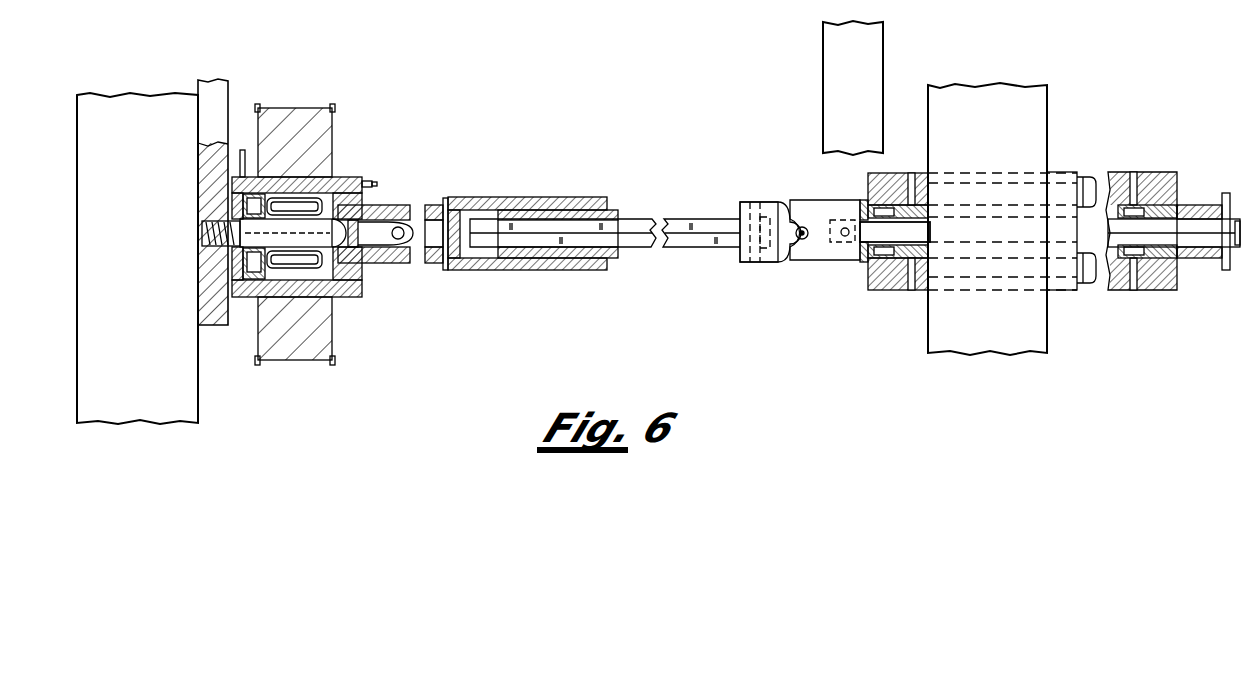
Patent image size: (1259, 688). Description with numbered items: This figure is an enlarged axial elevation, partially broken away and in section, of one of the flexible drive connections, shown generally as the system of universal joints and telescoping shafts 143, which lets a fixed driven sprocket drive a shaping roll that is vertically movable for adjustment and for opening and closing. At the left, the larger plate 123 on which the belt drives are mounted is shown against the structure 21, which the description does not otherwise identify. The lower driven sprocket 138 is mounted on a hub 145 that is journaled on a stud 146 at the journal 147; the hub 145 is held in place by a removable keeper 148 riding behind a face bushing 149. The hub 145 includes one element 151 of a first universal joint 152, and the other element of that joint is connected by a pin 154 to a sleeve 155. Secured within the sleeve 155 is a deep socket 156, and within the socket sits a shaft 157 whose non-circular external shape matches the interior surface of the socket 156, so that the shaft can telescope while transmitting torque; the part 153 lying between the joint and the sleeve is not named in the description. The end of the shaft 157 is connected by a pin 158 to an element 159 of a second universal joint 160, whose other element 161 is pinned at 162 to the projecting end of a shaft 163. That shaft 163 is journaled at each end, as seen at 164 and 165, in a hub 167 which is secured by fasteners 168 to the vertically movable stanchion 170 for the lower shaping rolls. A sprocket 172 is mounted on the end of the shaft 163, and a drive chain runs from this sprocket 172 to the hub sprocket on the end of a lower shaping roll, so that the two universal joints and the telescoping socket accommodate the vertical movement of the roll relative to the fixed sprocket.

The frame wall 21 is at (146, 318).
The plate 123 is at (206, 327).
The lower driven sprocket 138 is at (334, 346).
The system of universal joints and telescoping shafts 143 is at (612, 190).
The hub 145 is at (352, 176).
The stud 146 is at (203, 231).
The journal 147 is at (331, 297).
The removable keeper 148 is at (242, 150).
The face bushing 149 is at (255, 283).
The universal joint element 151 is at (391, 204).
The universal joint 152 is at (407, 272).
The spacer 153 is at (455, 271).
The pin 154 is at (445, 198).
The sleeve 155 is at (532, 197).
The deep socket 156 is at (555, 271).
The shaft 157 is at (682, 250).
The pin 158 is at (760, 263).
The universal joint element 159 is at (770, 202).
The universal joint 160 is at (798, 272).
The universal joint element 161 is at (822, 200).
The pin 162 is at (845, 237).
The shaft 163 is at (888, 222).
The journal 164 is at (892, 262).
The journal 165 is at (1160, 172).
The hub 167 is at (1152, 291).
The fasteners 168 is at (1090, 292).
The vertically movable stanchion 170 is at (1040, 355).
The sprocket 172 is at (1226, 203).